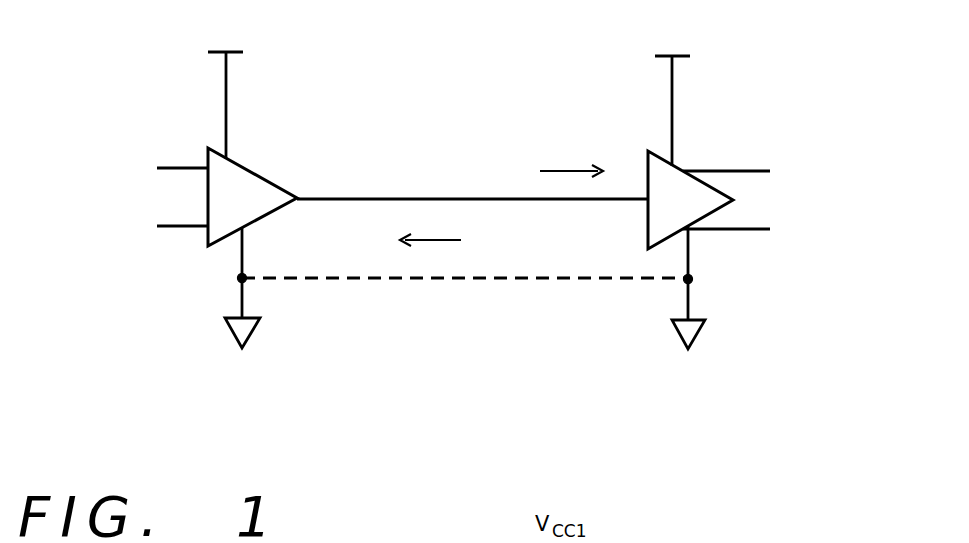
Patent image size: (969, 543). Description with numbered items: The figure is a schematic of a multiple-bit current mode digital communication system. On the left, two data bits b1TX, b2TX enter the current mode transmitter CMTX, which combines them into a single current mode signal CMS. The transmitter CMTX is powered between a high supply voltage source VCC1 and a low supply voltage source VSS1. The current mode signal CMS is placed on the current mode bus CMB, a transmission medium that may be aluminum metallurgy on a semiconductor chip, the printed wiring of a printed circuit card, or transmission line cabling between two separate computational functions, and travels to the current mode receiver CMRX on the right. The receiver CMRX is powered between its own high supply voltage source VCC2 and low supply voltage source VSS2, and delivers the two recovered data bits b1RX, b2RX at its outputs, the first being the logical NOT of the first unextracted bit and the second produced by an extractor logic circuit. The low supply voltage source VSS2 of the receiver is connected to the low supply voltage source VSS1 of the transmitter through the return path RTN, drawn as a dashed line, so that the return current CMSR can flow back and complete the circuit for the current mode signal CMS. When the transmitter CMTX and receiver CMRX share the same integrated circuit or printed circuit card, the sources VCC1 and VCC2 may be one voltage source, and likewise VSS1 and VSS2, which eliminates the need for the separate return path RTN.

The current mode transmitter CMTX is at (268, 190).
The current mode receiver CMRX is at (658, 183).
The high supply voltage source VCC1 is at (234, 83).
The high supply voltage source VCC2 is at (679, 87).
The low supply voltage source VSS1 is at (238, 313).
The low supply voltage source VSS2 is at (706, 313).
The first transmit data bit b1TX is at (140, 169).
The second transmit data bit b2TX is at (140, 227).
The first received data bit b1RX is at (768, 172).
The second received data bit b2RX is at (768, 230).
The current mode bus CMB is at (441, 197).
The current mode signal CMS is at (538, 173).
The return current CMSR is at (474, 241).
The return path RTN is at (438, 281).